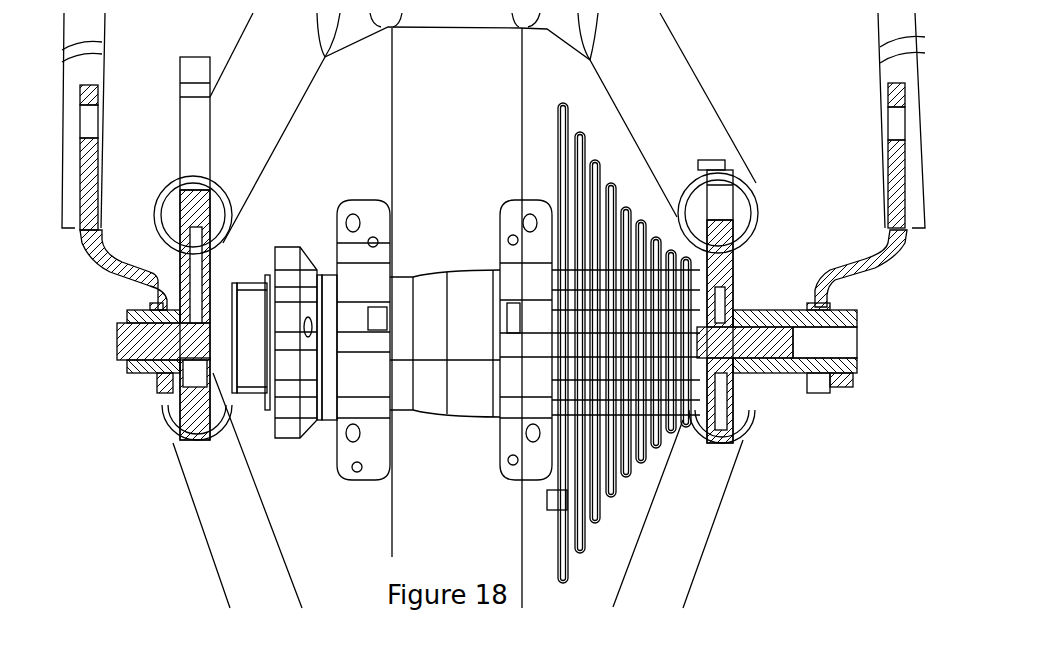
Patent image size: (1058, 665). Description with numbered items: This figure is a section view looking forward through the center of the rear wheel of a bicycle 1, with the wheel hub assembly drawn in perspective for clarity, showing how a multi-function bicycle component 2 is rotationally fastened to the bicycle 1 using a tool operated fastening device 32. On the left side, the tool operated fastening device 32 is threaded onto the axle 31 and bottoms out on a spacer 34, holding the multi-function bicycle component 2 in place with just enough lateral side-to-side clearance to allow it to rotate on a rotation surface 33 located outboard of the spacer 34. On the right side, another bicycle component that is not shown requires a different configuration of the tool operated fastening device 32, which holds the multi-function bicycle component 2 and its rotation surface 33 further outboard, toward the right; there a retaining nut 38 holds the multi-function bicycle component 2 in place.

The bicycle 1 is at (297, 118).
The multi-function bicycle component 2 is at (112, 32).
The axle 31 is at (140, 347).
The tool operated fastening device 32 is at (128, 310).
The rotation surface 33 is at (163, 243).
The spacer 34 is at (178, 380).
The retaining nut 38 is at (840, 383).